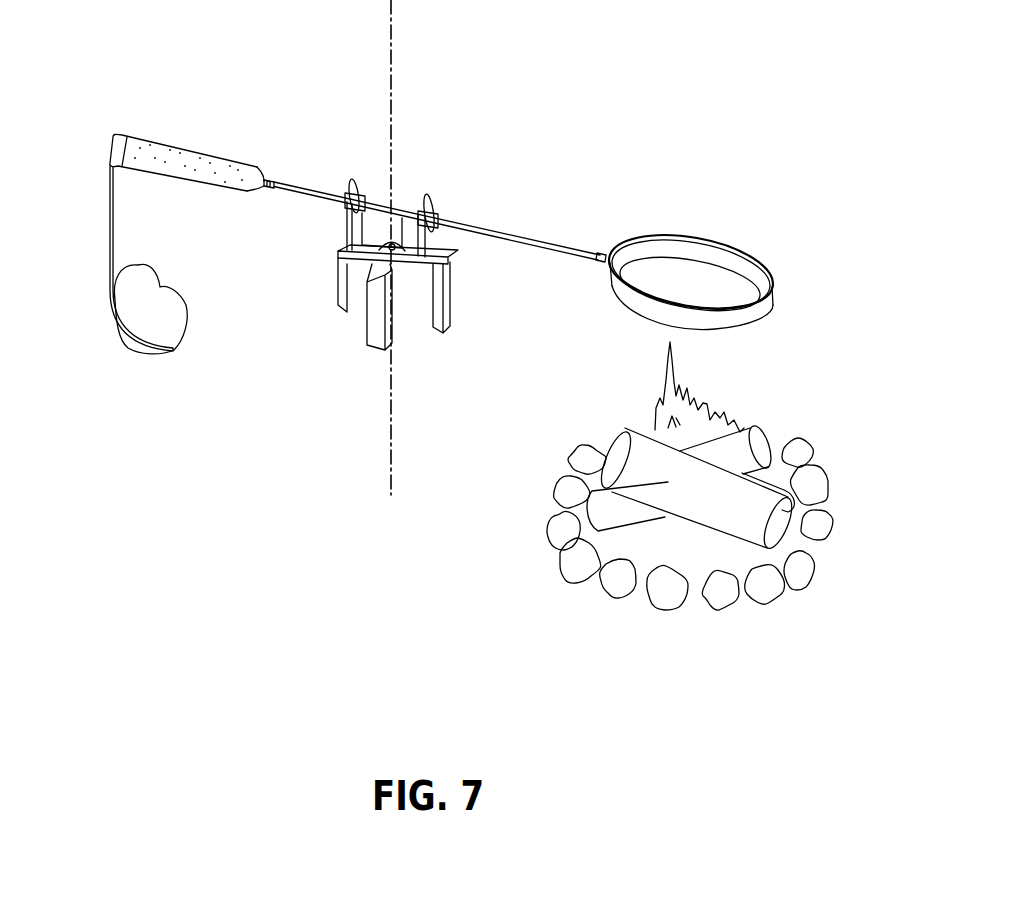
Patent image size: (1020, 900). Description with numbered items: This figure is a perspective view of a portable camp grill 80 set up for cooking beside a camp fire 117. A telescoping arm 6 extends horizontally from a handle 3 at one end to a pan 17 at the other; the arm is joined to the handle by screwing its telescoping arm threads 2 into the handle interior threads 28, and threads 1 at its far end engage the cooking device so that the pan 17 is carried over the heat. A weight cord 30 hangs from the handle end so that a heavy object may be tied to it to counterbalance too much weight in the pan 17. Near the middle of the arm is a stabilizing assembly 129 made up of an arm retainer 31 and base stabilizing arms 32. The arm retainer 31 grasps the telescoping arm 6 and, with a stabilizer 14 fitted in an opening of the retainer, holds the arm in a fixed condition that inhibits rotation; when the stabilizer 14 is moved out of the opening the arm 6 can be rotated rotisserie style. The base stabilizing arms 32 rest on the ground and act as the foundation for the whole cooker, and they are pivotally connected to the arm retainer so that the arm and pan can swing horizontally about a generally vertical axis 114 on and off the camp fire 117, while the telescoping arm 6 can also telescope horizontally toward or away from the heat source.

The threads 1 is at (601, 254).
The telescoping arm threads 2 is at (266, 180).
The handle 3 is at (179, 150).
The telescoping arm 6 is at (408, 216).
The stabilizer 14 is at (351, 182).
The pan 17 is at (726, 256).
The handle interior threads 28 is at (264, 166).
The weight cord 30 is at (109, 214).
The arm retainer 31 is at (347, 222).
The base stabilizing arms 32 is at (442, 308).
The portable camp grill 80 is at (627, 127).
The vertical axis 114 is at (391, 32).
The camp fire 117 is at (804, 389).
The stabilizing assembly 129 is at (303, 306).